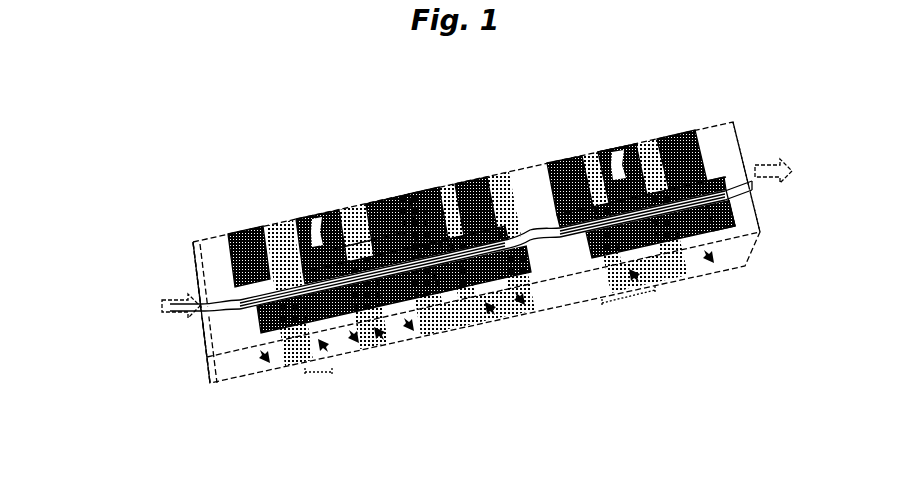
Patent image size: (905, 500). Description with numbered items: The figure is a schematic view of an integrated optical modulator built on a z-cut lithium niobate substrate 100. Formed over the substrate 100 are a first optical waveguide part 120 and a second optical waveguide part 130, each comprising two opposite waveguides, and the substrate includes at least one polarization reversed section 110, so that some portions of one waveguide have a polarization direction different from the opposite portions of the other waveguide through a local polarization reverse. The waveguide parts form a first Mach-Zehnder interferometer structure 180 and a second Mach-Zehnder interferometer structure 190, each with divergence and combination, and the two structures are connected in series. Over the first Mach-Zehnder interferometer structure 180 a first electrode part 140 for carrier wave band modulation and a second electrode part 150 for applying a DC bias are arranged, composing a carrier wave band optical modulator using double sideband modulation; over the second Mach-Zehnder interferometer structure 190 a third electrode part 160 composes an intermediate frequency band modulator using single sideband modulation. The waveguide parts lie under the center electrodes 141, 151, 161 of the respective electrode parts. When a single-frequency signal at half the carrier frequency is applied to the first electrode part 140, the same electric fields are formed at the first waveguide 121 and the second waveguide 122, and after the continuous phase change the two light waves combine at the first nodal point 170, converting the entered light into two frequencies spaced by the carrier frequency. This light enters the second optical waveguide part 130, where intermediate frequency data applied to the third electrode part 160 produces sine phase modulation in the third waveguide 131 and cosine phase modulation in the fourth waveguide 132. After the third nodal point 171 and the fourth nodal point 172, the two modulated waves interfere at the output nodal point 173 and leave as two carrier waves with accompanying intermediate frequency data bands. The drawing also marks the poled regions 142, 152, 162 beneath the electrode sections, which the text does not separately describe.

The z-cut LiNbO3 substrate 100 is at (722, 260).
The polarization reversed section 110 is at (603, 283).
The first optical waveguide part 120 is at (118, 273).
The first waveguide 121 is at (240, 282).
The second waveguide 122 is at (267, 323).
The second optical waveguide part 130 is at (800, 78).
The third waveguide 131 is at (743, 173).
The fourth waveguide 132 is at (730, 176).
The first electrode part 140 is at (385, 175).
The center electrode 141 is at (278, 305).
The periodically poled region 142 is at (272, 322).
The second electrode part 150 is at (485, 163).
The center electrode 151 is at (410, 232).
The second lower electrode 152 is at (470, 270).
The third electrode part 160 is at (700, 110).
The center electrode 161 is at (632, 205).
The third lower electrode 162 is at (657, 232).
The first nodal point 170 is at (527, 218).
The third nodal point 171 is at (714, 165).
The fourth nodal point 172 is at (730, 192).
The fourth nodal point 173 is at (745, 184).
The first Mach-Zehnder interferometer structure 180 is at (238, 443).
The second Mach-Zehnder interferometer structure 190 is at (582, 382).